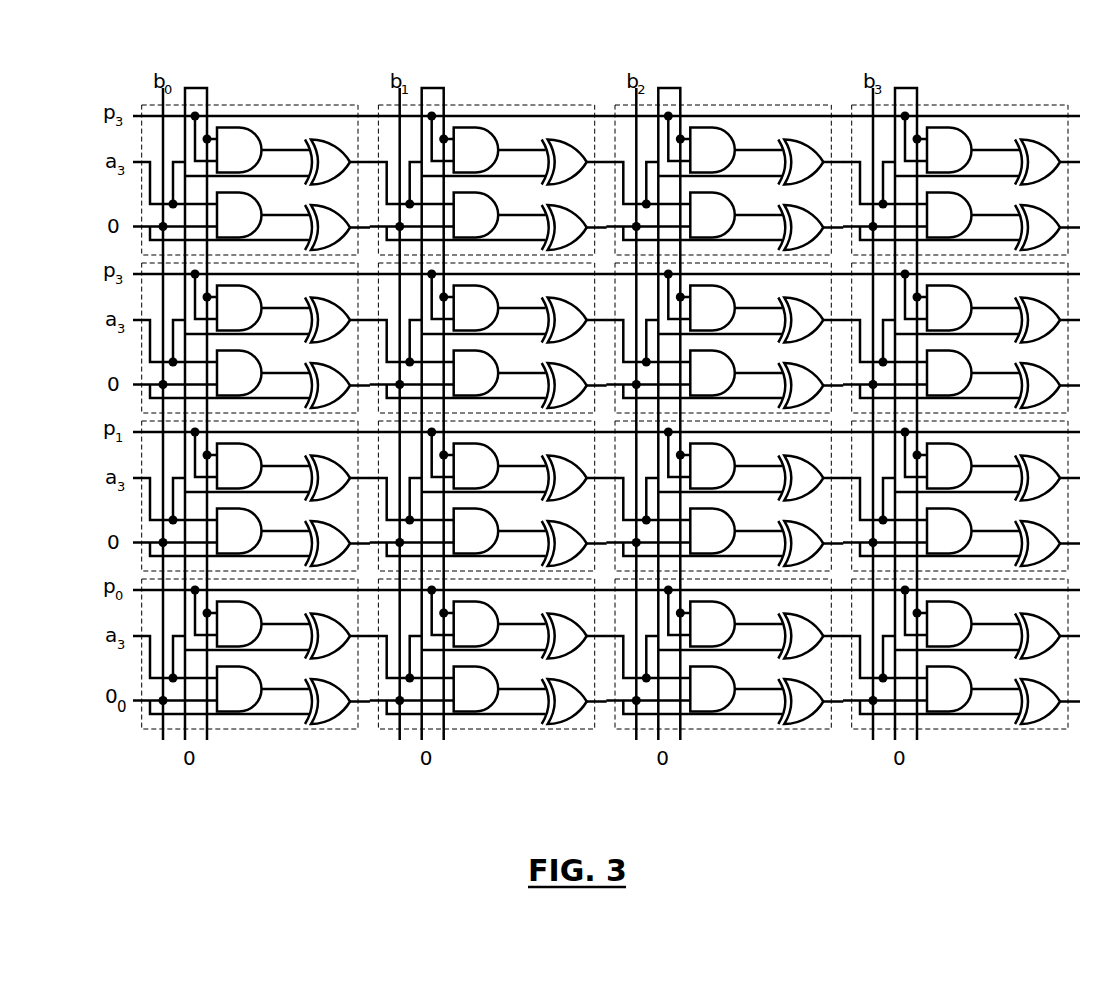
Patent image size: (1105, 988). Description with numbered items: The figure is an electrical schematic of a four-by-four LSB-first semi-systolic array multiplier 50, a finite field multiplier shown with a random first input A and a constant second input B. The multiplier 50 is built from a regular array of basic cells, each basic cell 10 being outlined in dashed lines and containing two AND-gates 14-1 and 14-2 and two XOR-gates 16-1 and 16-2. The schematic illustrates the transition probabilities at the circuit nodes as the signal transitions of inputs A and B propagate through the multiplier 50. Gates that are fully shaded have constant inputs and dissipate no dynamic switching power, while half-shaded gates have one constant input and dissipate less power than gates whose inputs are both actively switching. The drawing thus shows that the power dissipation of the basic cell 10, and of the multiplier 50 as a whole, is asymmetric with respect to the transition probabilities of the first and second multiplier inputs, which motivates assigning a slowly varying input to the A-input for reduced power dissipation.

The basic cell 10 is at (143, 125).
The 4×4 LSB-first semi-systolic array multiplier 50 is at (680, 33).
The AND-gate 14-1 is at (249, 128).
The AND-gate 14-2 is at (252, 196).
The XOR-gate 16-1 is at (329, 141).
The XOR-gate 16-2 is at (322, 204).